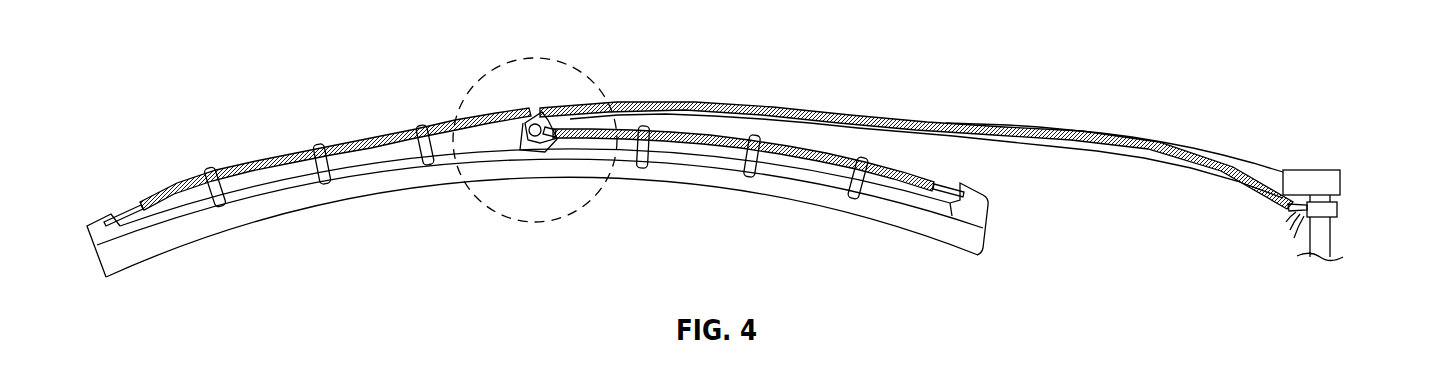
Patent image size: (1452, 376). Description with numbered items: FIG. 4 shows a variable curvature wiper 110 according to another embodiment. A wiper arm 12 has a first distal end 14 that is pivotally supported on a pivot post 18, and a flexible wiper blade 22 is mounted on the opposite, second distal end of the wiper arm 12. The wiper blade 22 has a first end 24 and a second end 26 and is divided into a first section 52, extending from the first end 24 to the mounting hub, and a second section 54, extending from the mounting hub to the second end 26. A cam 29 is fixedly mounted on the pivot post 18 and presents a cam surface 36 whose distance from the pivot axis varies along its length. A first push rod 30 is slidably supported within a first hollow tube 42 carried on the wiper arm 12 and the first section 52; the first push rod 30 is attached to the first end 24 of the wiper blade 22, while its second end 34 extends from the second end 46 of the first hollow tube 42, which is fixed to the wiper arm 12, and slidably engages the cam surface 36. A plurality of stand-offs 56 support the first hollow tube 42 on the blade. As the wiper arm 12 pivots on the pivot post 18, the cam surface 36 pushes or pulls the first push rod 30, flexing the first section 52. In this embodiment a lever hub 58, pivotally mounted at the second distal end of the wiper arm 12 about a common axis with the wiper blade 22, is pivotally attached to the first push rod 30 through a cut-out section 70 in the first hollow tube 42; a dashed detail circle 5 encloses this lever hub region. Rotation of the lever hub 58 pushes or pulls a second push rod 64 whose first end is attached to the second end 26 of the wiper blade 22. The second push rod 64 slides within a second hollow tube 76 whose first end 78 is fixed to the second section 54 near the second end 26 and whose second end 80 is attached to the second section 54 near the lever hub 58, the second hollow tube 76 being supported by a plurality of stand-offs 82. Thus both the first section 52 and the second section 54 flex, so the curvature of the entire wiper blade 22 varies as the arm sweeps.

The detail circle 5 is at (500, 62).
The wiper arm 12 is at (1221, 163).
The first distal end 14 is at (1308, 172).
The pivot post 18 is at (1332, 248).
The flexible wiper blade 22 is at (447, 192).
The first end 24 is at (100, 280).
The second end 26 is at (985, 246).
The cam 29 is at (1340, 210).
The first push rod 30 is at (1298, 200).
The second end 34 is at (1295, 220).
The cam surface 36 is at (1300, 218).
The first hollow tube 42 is at (435, 120).
The second end 46 is at (1290, 213).
The first section 52 is at (270, 210).
The second section 54 is at (800, 196).
The stand-offs 56 is at (213, 170).
The lever hub 58 is at (548, 124).
The second push rod 64 is at (950, 212).
The cut-out section 70 is at (530, 113).
The second hollow tube 76 is at (908, 172).
The first end 78 is at (943, 195).
The second end 80 is at (585, 148).
The stand-offs 82 is at (660, 140).
The variable curvature wiper 110 is at (352, 298).